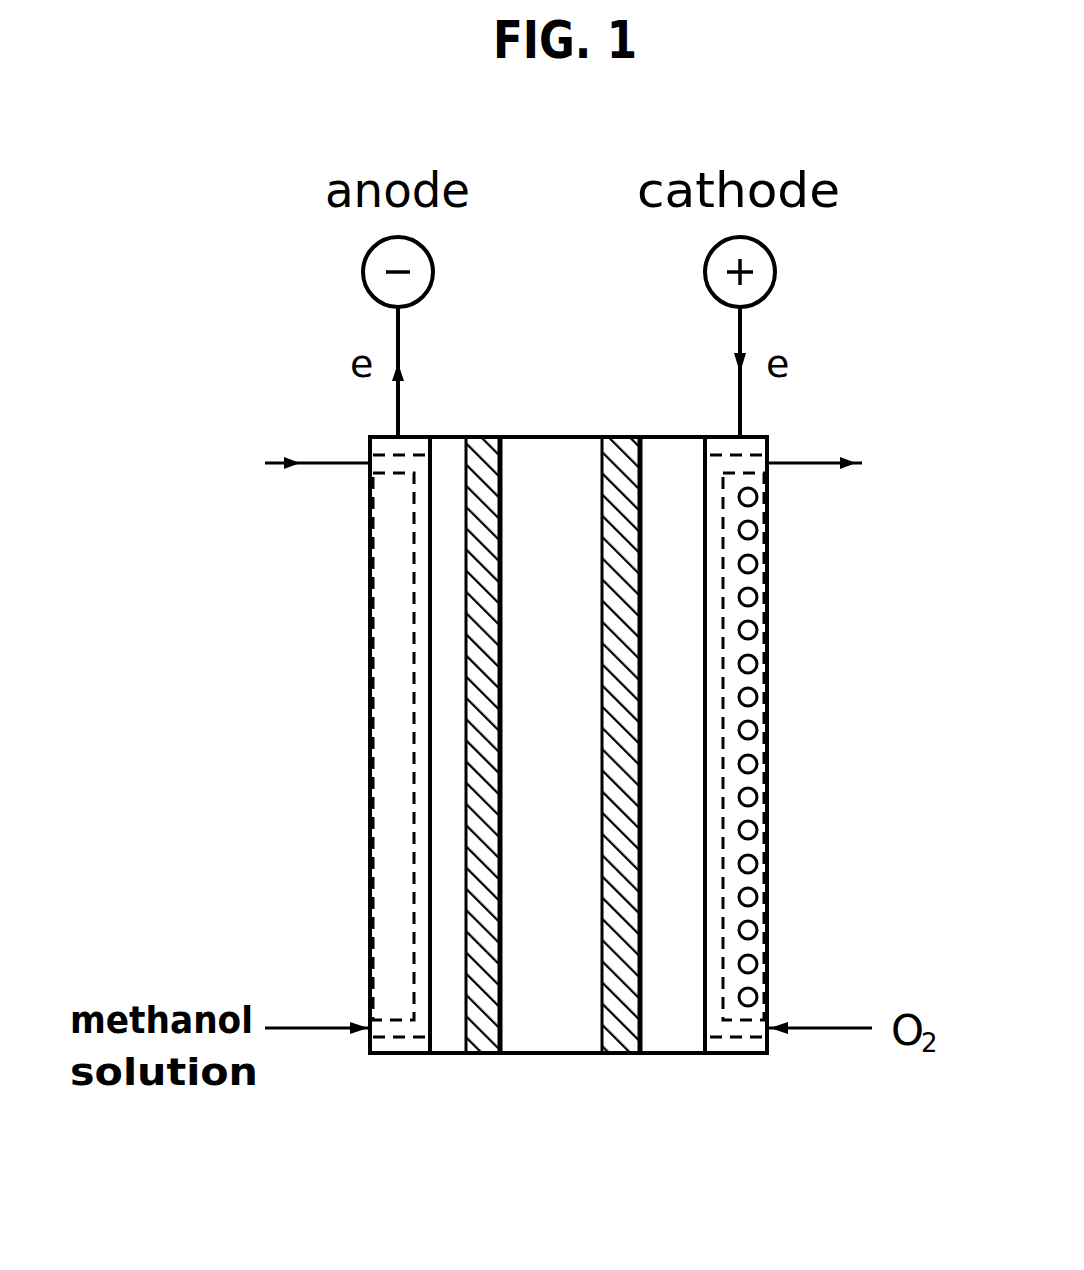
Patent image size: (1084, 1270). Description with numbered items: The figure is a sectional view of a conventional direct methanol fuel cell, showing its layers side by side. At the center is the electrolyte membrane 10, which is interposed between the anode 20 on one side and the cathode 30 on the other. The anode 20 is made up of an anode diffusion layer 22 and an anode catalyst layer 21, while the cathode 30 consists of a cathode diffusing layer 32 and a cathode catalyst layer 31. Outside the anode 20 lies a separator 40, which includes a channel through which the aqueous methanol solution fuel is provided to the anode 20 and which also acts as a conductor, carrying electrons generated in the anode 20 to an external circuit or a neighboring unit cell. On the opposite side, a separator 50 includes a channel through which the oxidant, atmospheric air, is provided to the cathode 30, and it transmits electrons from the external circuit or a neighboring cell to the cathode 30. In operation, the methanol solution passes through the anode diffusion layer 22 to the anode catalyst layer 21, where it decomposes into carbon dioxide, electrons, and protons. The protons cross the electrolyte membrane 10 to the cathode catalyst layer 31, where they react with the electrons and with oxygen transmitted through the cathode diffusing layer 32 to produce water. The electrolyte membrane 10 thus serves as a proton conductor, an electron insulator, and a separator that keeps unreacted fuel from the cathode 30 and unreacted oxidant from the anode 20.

The electrolyte membrane 10 is at (550, 1030).
The anode 20 is at (378, 755).
The anode catalyst layer 21 is at (478, 1055).
The anode diffusion layer 22 is at (450, 613).
The cathode 30 is at (747, 754).
The cathode catalyst layer 31 is at (617, 1055).
The cathode diffusing layer 32 is at (680, 614).
The separator 40 is at (397, 712).
The separator 50 is at (753, 717).